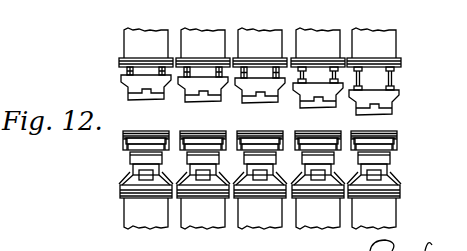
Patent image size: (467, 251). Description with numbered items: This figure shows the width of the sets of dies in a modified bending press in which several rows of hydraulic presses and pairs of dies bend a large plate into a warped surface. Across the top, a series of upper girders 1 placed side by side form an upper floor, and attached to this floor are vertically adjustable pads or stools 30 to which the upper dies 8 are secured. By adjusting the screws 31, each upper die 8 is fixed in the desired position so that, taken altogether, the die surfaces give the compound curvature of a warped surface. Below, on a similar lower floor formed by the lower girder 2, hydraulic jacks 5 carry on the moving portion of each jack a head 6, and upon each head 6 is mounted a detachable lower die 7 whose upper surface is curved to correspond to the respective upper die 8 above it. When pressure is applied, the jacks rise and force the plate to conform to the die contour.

The upper girder 1 is at (312, 42).
The lower girder 2 is at (212, 222).
The hydraulic jack 5 is at (140, 172).
The head 6 is at (124, 147).
The lower die 7 is at (186, 131).
The upper die 8 is at (390, 118).
The vertically adjustable pad or stool 30 is at (123, 81).
The screw 31 is at (384, 78).